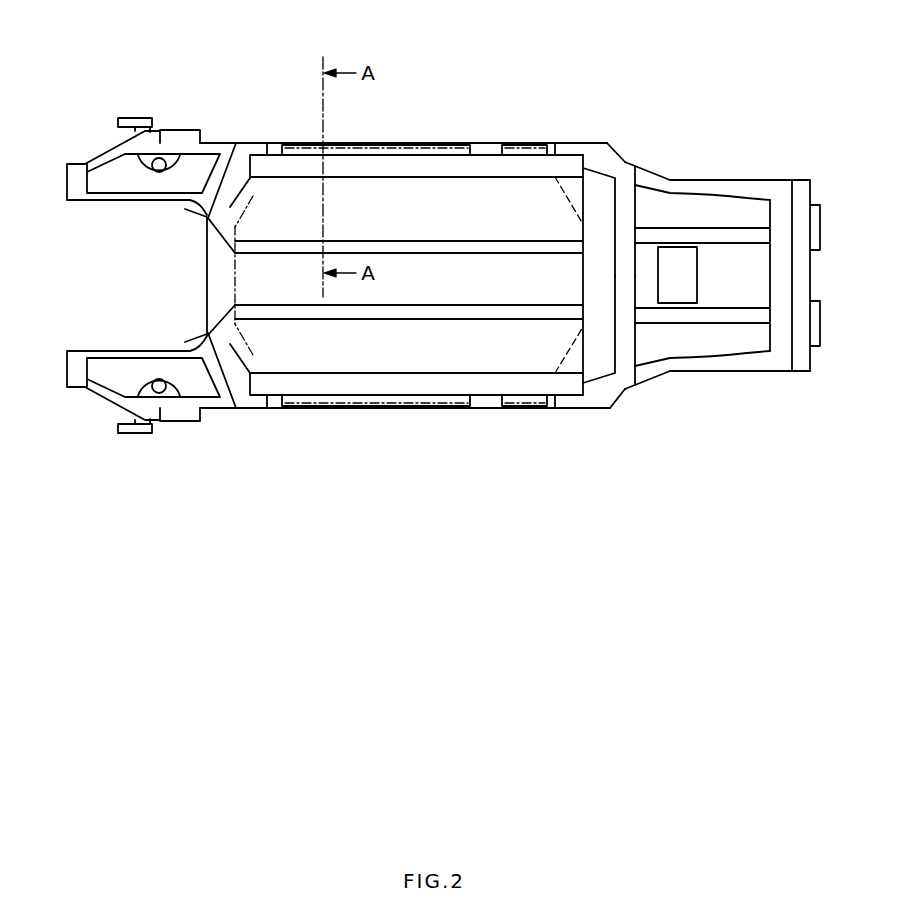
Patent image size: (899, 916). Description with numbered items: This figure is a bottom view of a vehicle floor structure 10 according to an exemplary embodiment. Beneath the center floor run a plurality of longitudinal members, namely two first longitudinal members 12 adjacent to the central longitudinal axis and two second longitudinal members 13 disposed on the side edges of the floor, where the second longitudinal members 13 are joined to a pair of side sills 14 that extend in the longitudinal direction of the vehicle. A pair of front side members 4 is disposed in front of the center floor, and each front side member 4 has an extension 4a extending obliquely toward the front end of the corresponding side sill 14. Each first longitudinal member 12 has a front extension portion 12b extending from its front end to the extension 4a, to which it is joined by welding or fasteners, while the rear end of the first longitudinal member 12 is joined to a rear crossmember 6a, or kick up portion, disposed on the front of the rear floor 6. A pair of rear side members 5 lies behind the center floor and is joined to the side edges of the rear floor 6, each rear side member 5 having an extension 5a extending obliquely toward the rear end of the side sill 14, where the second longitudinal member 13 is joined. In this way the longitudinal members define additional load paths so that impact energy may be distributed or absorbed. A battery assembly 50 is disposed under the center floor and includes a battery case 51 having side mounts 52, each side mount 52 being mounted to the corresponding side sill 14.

The vehicle floor structure 10 is at (163, 26).
The front side member 4 is at (135, 201).
The extension 4a is at (232, 168).
The battery assembly 50 is at (216, 279).
The front extension portion 12b is at (233, 230).
The side mount 52 is at (373, 146).
The second longitudinal member 13 is at (427, 167).
The side sill 14 is at (482, 147).
The first longitudinal member 12 is at (527, 240).
The battery case 51 is at (566, 192).
The extension 5a is at (612, 162).
The rear side member 5 is at (743, 187).
The rear floor 6 is at (743, 333).
The rear crossmember 6a is at (603, 340).